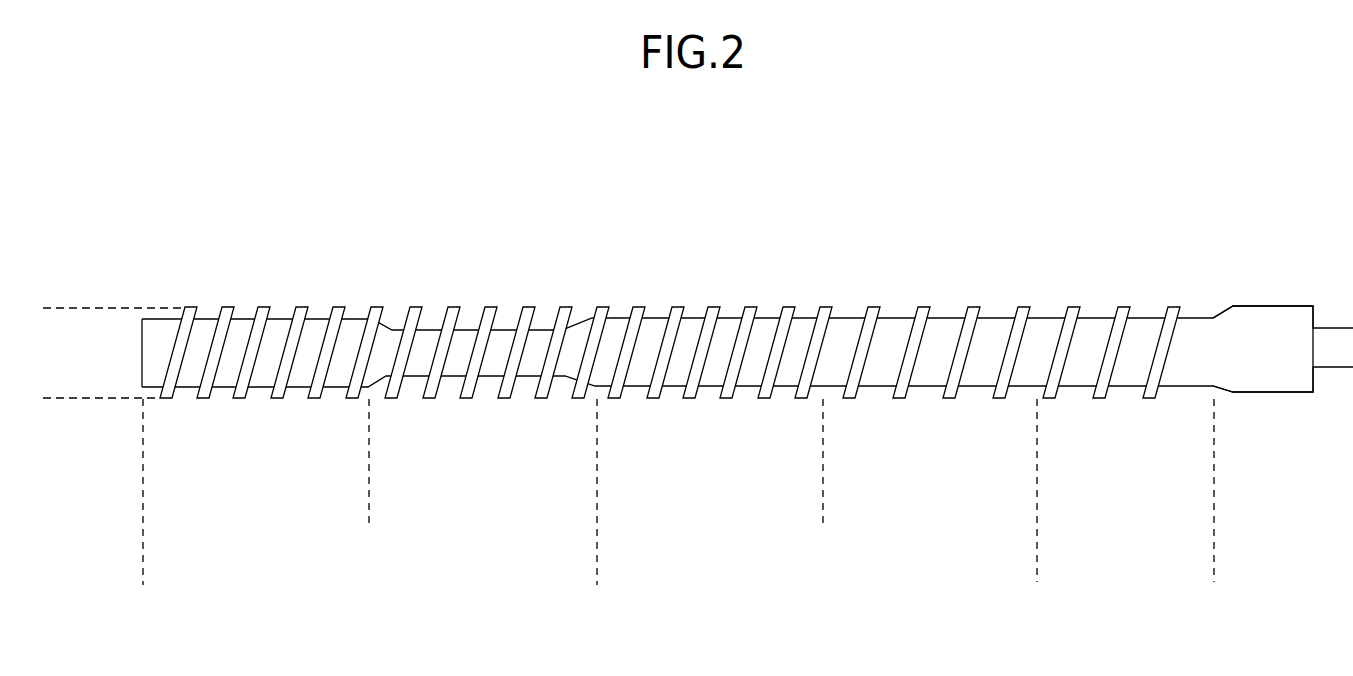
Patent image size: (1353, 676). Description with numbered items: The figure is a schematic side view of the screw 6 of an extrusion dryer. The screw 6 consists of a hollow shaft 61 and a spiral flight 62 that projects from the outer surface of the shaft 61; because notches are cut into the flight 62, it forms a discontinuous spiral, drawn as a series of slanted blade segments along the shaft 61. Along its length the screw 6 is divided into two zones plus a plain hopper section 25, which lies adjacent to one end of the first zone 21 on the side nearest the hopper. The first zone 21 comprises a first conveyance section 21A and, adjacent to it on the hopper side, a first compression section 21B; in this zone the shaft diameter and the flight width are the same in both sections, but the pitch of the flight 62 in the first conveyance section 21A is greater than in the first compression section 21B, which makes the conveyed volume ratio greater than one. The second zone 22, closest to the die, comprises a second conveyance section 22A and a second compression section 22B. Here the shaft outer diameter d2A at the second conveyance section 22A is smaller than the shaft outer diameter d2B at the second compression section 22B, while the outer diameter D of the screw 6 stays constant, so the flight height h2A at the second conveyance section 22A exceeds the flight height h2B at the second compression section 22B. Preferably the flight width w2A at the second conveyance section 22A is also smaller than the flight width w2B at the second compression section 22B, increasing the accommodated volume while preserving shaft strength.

The screw 6 is at (691, 374).
The first zone 21 is at (876, 437).
The first conveyance section 21A is at (1001, 413).
The first compression section 21B is at (597, 520).
The second zone 22 is at (370, 437).
The second conveyance section 22A is at (471, 413).
The second compression section 22B is at (369, 520).
The hopper section 25 is at (1214, 567).
The shaft 61 is at (728, 333).
The flight 62 is at (748, 307).
The outer diameter of the screw D is at (52, 308).
The flight height at the second compression section h2B is at (246, 342).
The shaft outer diameter at the second compression section d2B is at (310, 387).
The flight height at the second conveyance section h2A is at (430, 350).
The shaft outer diameter at the second conveyance section d2A is at (497, 376).
The flight width at the second compression section w2B is at (272, 399).
The flight width at the second conveyance section w2A is at (421, 399).